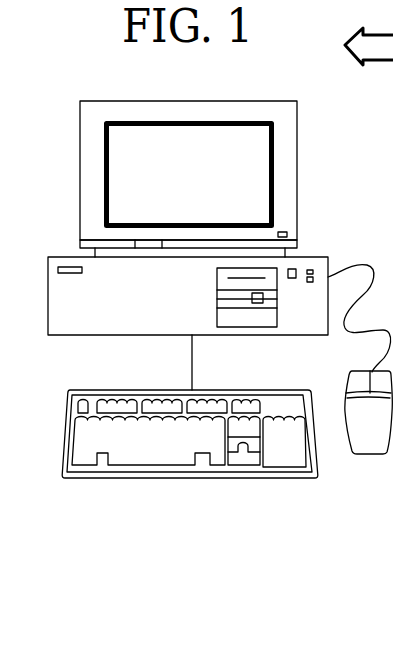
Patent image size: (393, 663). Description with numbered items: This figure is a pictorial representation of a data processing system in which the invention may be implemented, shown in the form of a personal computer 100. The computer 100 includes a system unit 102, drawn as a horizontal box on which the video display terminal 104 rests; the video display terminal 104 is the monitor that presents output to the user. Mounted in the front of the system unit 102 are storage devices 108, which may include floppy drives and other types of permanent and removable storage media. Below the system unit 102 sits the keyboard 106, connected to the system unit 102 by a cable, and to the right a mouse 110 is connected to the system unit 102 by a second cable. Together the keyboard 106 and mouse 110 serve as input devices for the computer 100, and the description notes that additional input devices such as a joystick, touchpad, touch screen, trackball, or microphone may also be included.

The computer 100 is at (208, 80).
The system unit 102 is at (219, 323).
The video display terminal 104 is at (84, 92).
The keyboard 106 is at (210, 488).
The storage devices 108 is at (204, 302).
The mouse 110 is at (365, 466).